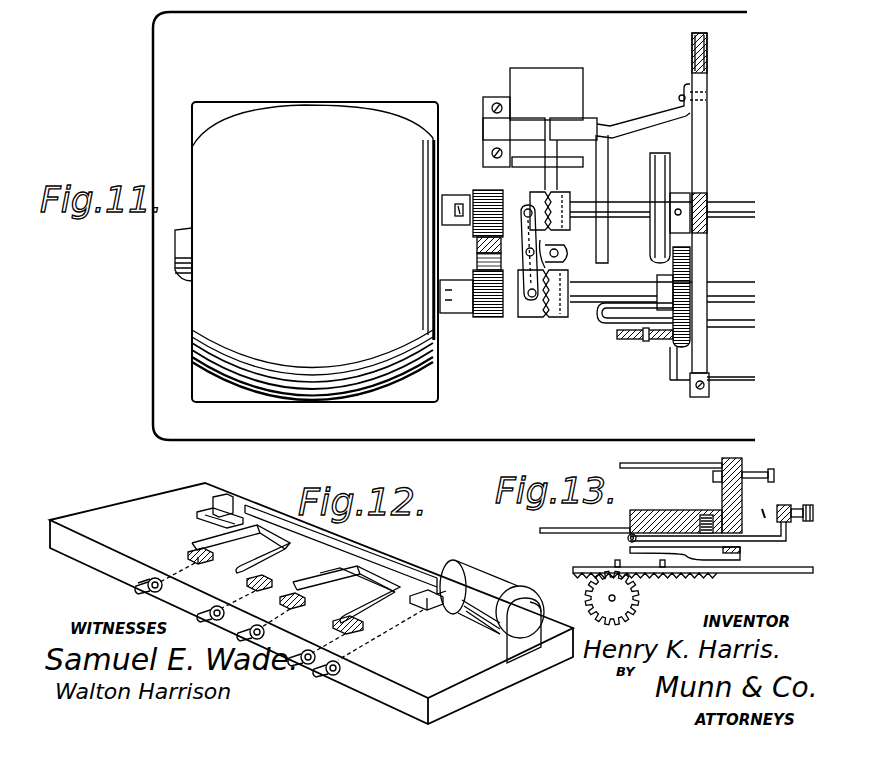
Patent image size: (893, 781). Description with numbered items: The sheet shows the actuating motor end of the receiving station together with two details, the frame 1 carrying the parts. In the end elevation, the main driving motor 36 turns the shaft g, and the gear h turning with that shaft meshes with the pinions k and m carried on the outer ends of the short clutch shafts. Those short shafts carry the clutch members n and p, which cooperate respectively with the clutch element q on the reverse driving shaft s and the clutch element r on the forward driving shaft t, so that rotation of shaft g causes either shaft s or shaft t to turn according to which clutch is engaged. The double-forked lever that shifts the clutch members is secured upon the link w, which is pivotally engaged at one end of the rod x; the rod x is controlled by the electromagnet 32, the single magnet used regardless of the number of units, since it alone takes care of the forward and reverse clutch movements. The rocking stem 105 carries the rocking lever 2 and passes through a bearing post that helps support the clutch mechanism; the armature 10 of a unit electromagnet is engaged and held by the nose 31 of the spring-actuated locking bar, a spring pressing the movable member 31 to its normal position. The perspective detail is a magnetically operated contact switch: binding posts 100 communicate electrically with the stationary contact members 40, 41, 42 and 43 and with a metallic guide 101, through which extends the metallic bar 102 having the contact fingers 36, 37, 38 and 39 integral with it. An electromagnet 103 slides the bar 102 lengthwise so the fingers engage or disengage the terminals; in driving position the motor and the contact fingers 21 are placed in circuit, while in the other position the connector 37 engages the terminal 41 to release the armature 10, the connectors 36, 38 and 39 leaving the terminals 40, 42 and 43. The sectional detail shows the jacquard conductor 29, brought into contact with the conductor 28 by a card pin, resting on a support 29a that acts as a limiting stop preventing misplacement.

In FIG. 11, the frame post 1 is at (706, 97).
In FIG. 11, the rocking lever 2 is at (522, 206).
In FIG. 11, the pinion k is at (481, 192).
In FIG. 11, the shaft g is at (477, 250).
In FIG. 11, the gear h is at (477, 266).
In FIG. 11, the pinion m is at (486, 318).
In FIG. 11, the clutch member n is at (538, 205).
In FIG. 11, the clutch element q is at (562, 195).
In FIG. 11, the clutch member p is at (520, 318).
In FIG. 11, the clutch element r is at (568, 310).
In FIG. 11, the reverse driving shaft s is at (588, 207).
In FIG. 11, the forward driving shaft t is at (630, 288).
In FIG. 11, the rod x is at (553, 254).
In FIG. 11, the link w is at (558, 257).
In FIG. 11, the rocking stem 105 is at (535, 251).
In FIG. 11, the armature 10 is at (671, 376).
In FIG. 11, the nose 31 is at (656, 339).
In FIG. 11, the electromagnet 32 is at (572, 88).
In FIG. 11, the main driving motor 36 is at (306, 252).
In FIG. 12, the main driving motor 36 is at (240, 519).
In FIG. 12, the contact finger 37 is at (285, 549).
In FIG. 12, the contact finger 38 is at (346, 594).
In FIG. 12, the contact finger 39 is at (380, 597).
In FIG. 12, the terminal 40 is at (190, 552).
In FIG. 12, the terminal 41 is at (248, 582).
In FIG. 12, the terminal 42 is at (292, 606).
In FIG. 12, the terminal 43 is at (357, 624).
In FIG. 12, the binding posts 100 is at (331, 676).
In FIG. 12, the metallic guide 101 is at (430, 578).
In FIG. 12, the metallic bar 102 is at (340, 553).
In FIG. 12, the electromagnet 103 is at (494, 586).
In FIG. 13, the contact fingers 21 is at (799, 574).
In FIG. 13, the conductor 28 is at (768, 503).
In FIG. 13, the conductor 29 is at (767, 546).
In FIG. 13, the support 29a is at (737, 558).